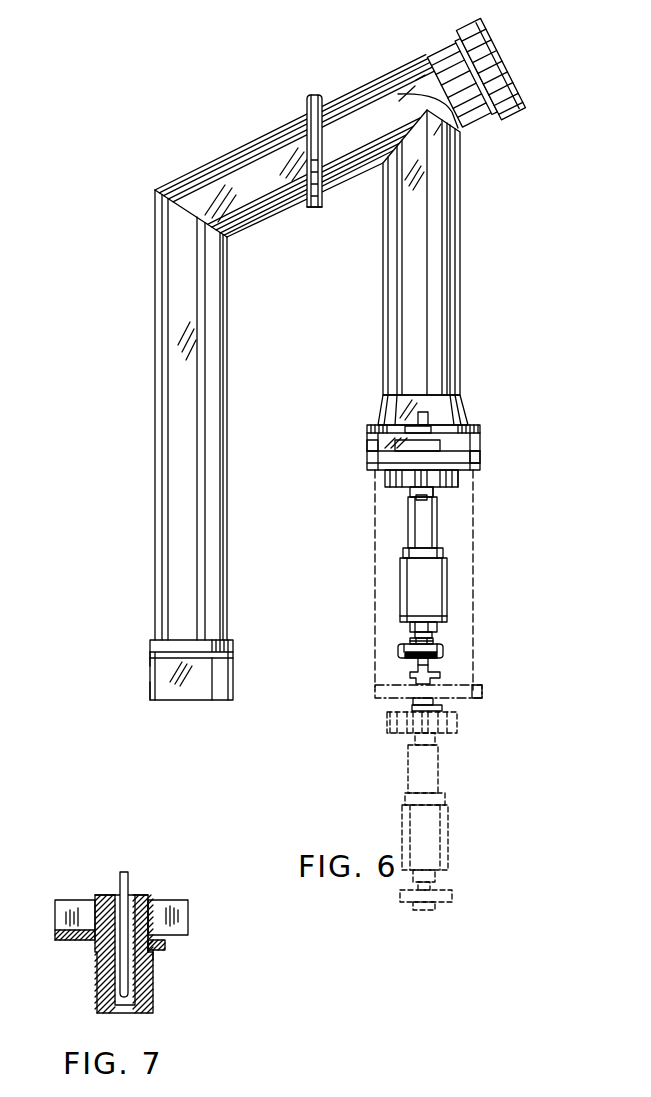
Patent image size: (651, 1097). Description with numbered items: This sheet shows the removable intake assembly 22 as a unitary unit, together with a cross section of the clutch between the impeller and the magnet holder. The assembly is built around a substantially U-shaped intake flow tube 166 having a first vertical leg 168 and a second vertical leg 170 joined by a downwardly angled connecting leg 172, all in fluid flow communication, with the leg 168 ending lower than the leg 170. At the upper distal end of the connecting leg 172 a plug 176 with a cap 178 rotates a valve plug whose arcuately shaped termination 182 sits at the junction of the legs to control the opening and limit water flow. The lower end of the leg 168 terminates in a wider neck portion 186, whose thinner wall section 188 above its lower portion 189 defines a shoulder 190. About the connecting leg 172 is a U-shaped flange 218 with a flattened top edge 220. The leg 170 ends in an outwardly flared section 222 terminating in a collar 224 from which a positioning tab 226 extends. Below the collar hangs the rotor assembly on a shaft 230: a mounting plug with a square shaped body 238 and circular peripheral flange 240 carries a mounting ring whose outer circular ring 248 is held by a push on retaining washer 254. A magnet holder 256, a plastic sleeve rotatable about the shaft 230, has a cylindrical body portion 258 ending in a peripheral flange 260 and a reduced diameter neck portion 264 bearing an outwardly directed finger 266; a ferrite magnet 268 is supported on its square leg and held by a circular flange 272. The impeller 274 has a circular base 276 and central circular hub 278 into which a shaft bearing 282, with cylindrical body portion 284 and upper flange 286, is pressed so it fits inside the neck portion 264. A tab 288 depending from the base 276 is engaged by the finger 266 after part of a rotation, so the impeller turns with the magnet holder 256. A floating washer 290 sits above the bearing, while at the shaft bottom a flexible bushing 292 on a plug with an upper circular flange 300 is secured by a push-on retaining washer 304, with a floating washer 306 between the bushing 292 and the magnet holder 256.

In FIG. 6, the intake assembly 22 is at (216, 137).
In FIG. 6, the intake flow tube 166 is at (150, 230).
In FIG. 6, the first vertical leg 168 is at (160, 385).
In FIG. 6, the second vertical leg 170 is at (461, 260).
In FIG. 6, the connecting leg 172 is at (266, 213).
In FIG. 6, the plug 176 is at (444, 45).
In FIG. 6, the cap 178 is at (522, 112).
In FIG. 6, the arcuately shaped termination 182 is at (416, 80).
In FIG. 6, the neck portion 186 is at (236, 690).
In FIG. 6, the thinner wall section 188 is at (152, 660).
In FIG. 6, the lower portion 189 is at (152, 689).
In FIG. 6, the shoulder 190 is at (212, 672).
In FIG. 6, the U-shaped flange 218 is at (320, 205).
In FIG. 6, the flattened top edge 220 is at (312, 94).
In FIG. 6, the outwardly flared section 222 is at (468, 410).
In FIG. 6, the collar 224 is at (482, 440).
In FIG. 6, the positioning tab 226 is at (424, 414).
In FIG. 6, the square shaped body 238 is at (440, 438).
In FIG. 6, the circular peripheral flange 240 is at (400, 471).
In FIG. 6, the outer circular ring 248 is at (372, 448).
In FIG. 6, the push on retaining washer 254 is at (410, 432).
In FIG. 7, the magnet holder 256 is at (160, 998).
In FIG. 6, the cylindrical body portion 258 is at (408, 514).
In FIG. 6, the peripheral flange 260 is at (403, 553).
In FIG. 6, the neck portion 264 is at (413, 492).
In FIG. 7, the neck portion 264 is at (150, 921).
In FIG. 6, the finger 266 is at (410, 498).
In FIG. 7, the finger 266 is at (153, 955).
In FIG. 6, the magnet 268 is at (452, 589).
In FIG. 6, the circular flange 272 is at (437, 628).
In FIG. 7, the impeller 274 is at (167, 941).
In FIG. 6, the circular base 276 is at (467, 486).
In FIG. 7, the central circular hub 278 is at (92, 901).
In FIG. 7, the shaft bearing 282 is at (134, 897).
In FIG. 7, the cylindrical body portion 284 is at (112, 896).
In FIG. 7, the upper flange 286 is at (167, 901).
In FIG. 6, the tab 288 is at (432, 493).
In FIG. 7, the tab 288 is at (152, 948).
In FIG. 6, the floating washer 290 is at (473, 460).
In FIG. 6, the flexible bushing 292 is at (443, 650).
In FIG. 6, the upper circular flange 300 is at (433, 641).
In FIG. 6, the push-on retaining washer 304 is at (437, 661).
In FIG. 6, the floating washer 306 is at (410, 641).
In FIG. 7, the shaft 230 is at (127, 876).